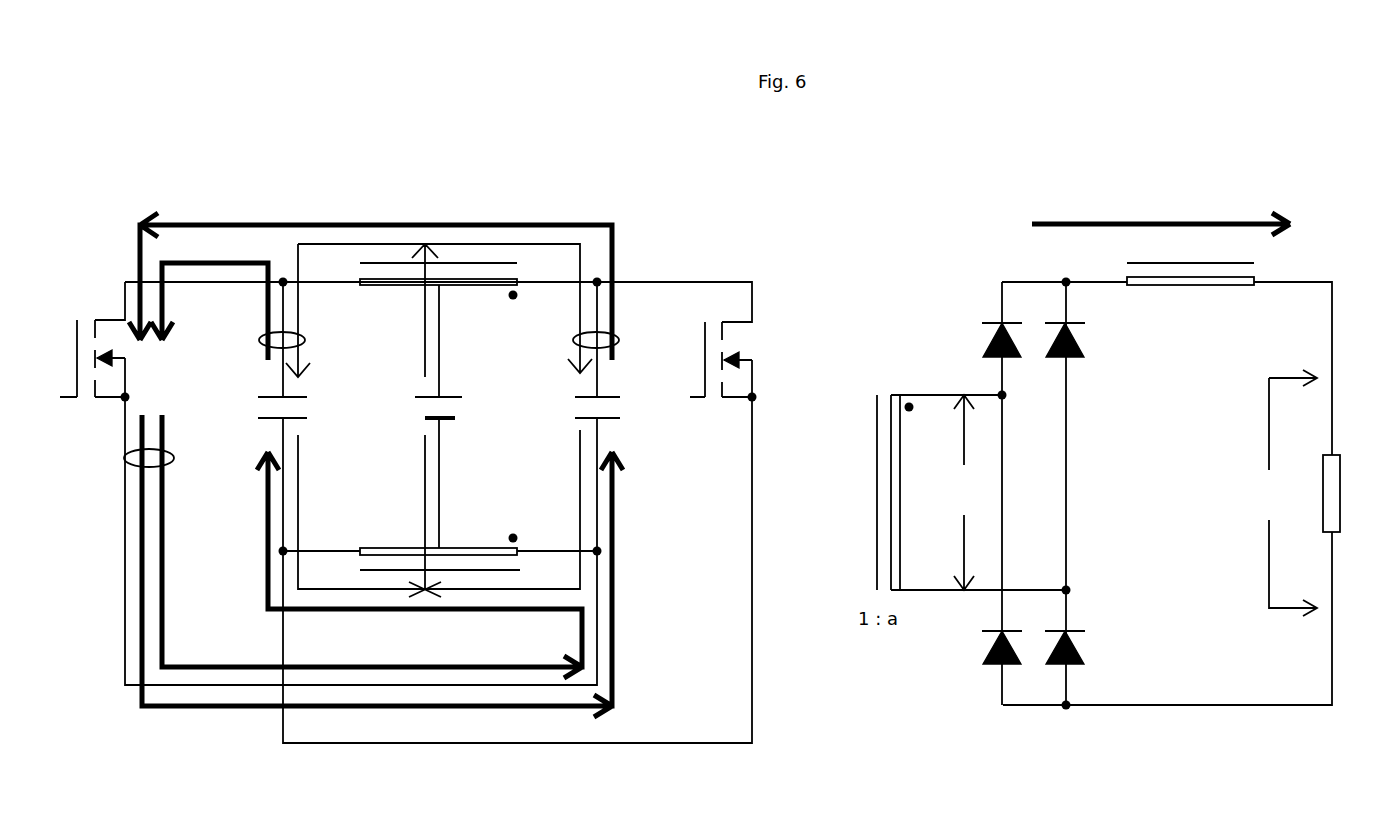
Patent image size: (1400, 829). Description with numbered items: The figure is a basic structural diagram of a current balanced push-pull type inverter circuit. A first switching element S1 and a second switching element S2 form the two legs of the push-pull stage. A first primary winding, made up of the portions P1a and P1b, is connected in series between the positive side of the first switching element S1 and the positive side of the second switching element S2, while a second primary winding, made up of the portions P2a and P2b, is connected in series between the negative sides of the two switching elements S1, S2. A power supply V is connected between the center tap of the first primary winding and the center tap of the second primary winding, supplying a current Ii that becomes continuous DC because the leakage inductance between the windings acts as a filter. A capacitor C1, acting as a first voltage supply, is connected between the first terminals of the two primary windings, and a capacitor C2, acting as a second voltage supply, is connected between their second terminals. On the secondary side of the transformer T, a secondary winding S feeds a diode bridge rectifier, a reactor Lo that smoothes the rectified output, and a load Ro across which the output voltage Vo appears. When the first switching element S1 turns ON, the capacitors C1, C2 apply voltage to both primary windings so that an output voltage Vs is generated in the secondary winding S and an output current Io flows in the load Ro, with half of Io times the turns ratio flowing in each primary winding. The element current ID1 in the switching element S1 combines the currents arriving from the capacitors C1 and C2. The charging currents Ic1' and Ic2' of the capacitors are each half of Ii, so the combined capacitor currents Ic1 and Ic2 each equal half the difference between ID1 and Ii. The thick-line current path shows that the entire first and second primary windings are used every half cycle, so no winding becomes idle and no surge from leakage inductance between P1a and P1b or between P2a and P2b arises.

The first switching element S1 is at (110, 361).
The second switching element S2 is at (739, 362).
The capacitor (first voltage supply) C1 is at (579, 408).
The capacitor (second voltage supply) C2 is at (302, 408).
The power supply V is at (443, 426).
The first primary winding portion P1a is at (489, 307).
The first primary winding portion P1b is at (438, 292).
The second primary winding portion P2a is at (489, 531).
The second primary winding portion P2b is at (440, 545).
The current supplied from the power supply Ii is at (420, 420).
The combined current of capacitor C1 Ic1 is at (619, 340).
The charging current of capacitor C1 Ic1' is at (508, 416).
The combined current of capacitor C2 Ic2 is at (257, 340).
The charging current of capacitor C2 Ic2' is at (355, 416).
The element current ID1 is at (124, 458).
The transformer T is at (875, 476).
The secondary winding S is at (978, 492).
The output voltage Vs is at (962, 492).
The reactor Lo is at (1190, 292).
The load Ro is at (1350, 493).
The output voltage across load Vo is at (1285, 493).
The output current Io is at (1179, 225).